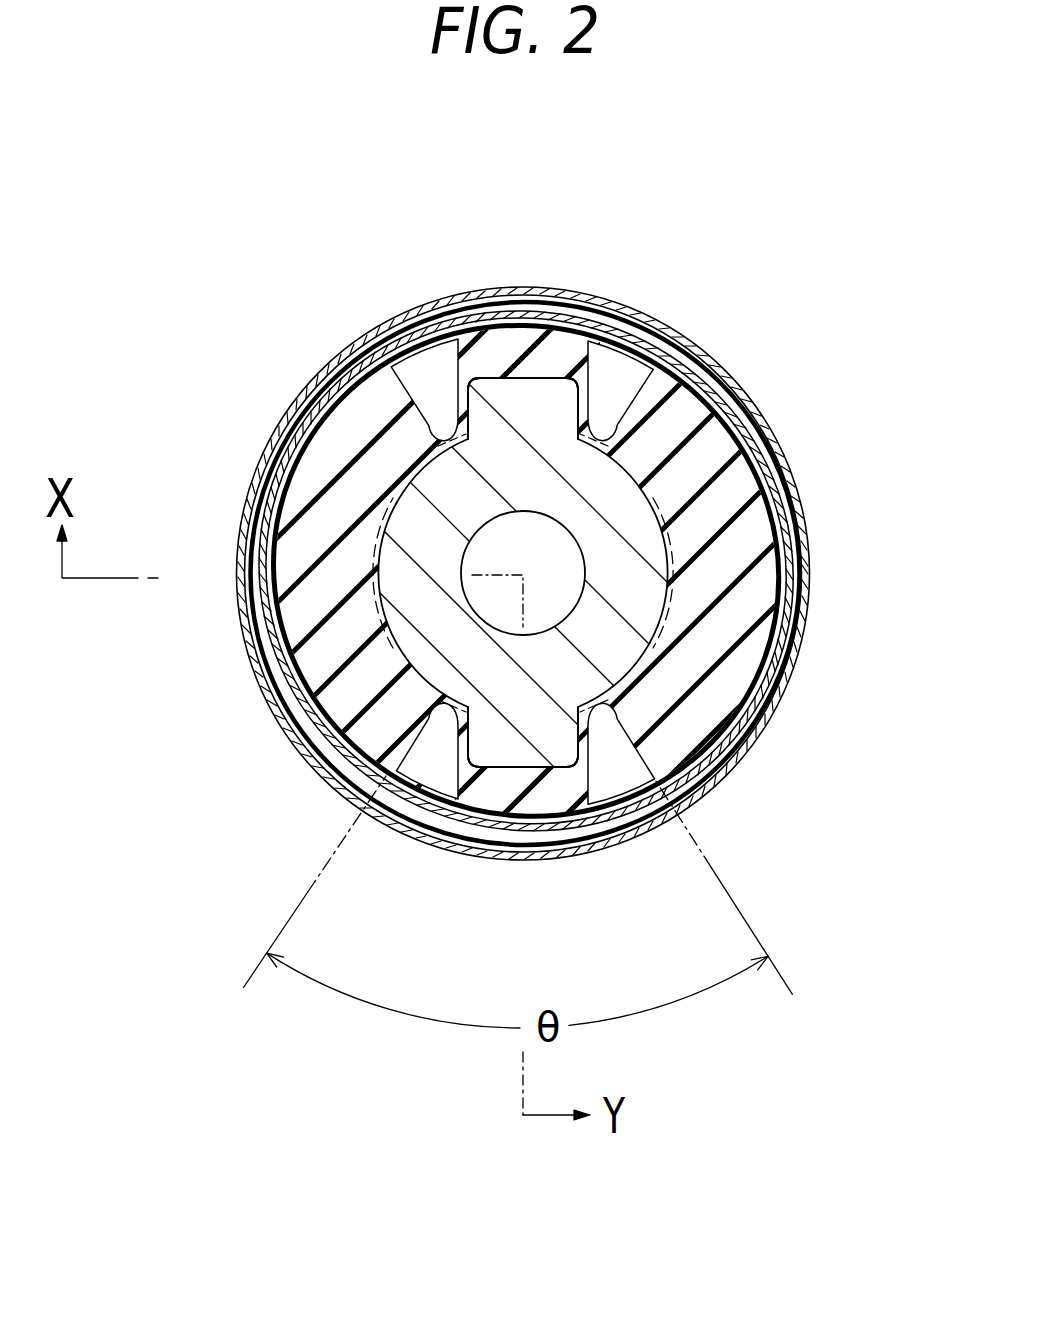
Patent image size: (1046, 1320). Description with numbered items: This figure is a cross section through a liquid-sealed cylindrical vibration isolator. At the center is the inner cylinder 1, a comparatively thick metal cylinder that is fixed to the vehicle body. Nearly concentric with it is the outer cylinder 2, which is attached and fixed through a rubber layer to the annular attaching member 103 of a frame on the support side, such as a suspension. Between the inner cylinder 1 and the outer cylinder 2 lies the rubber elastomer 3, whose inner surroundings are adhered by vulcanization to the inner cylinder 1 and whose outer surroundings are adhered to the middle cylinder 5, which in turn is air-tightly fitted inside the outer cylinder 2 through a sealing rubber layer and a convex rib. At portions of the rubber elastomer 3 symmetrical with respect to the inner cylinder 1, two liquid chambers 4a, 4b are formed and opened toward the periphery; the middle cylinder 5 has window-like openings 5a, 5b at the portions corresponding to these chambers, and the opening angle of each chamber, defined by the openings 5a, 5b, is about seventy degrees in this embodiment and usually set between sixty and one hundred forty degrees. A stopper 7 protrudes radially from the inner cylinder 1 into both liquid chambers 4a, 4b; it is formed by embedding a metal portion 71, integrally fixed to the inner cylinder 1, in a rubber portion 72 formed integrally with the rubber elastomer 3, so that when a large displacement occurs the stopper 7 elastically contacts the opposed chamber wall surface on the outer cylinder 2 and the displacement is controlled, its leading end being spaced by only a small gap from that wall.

The inner cylinder 1 is at (630, 638).
The outer cylinder 2 is at (785, 688).
The rubber elastomer 3 is at (713, 510).
The liquid chamber 4a is at (622, 777).
The liquid chamber 4b is at (623, 370).
The middle cylinder 5 is at (763, 525).
The window-like opening 5a is at (423, 777).
The window-like opening 5b is at (425, 372).
The stopper 7 is at (637, 180).
The metal portion 71 is at (530, 395).
The rubber portion 72 is at (515, 330).
The annular attaching member 103 is at (650, 323).